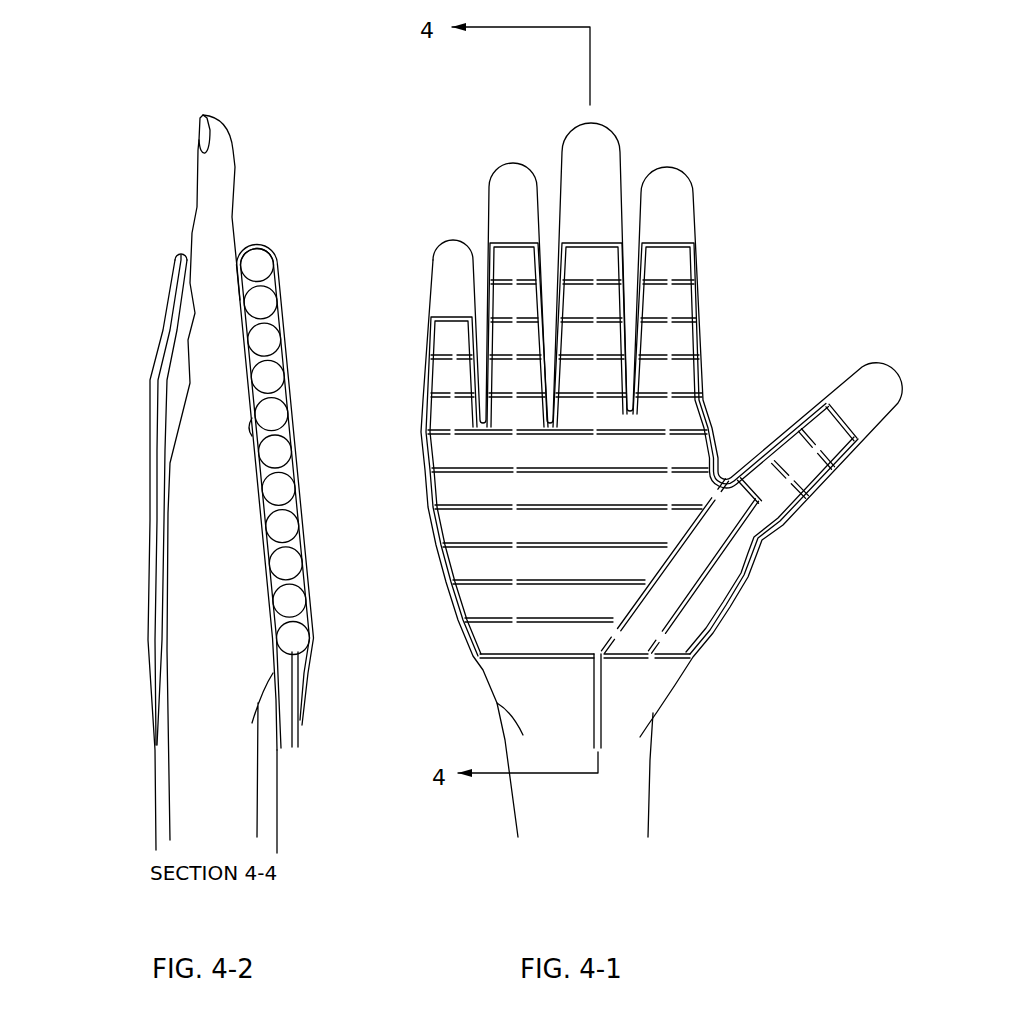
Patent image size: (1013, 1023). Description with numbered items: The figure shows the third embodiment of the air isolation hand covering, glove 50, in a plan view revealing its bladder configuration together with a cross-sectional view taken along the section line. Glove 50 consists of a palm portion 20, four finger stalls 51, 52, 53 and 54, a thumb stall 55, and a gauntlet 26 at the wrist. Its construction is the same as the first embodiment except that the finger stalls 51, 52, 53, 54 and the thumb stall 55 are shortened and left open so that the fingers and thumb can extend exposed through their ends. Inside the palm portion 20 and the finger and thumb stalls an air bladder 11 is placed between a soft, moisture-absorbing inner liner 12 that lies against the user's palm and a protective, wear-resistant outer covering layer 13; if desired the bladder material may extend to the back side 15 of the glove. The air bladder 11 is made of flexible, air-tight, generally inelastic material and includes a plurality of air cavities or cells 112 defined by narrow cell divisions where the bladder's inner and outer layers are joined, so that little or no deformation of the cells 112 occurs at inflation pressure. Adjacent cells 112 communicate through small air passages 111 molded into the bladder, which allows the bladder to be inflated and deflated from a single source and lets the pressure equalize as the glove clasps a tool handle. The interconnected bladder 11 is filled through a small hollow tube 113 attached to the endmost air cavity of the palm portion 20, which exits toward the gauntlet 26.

In FIG. 4-1, the glove 50 is at (750, 345).
In FIG. 4-2, the glove 50 is at (120, 217).
In FIG. 4-1, the finger stall 51 is at (447, 330).
In FIG. 4-1, the finger stall 52 is at (512, 263).
In FIG. 4-1, the finger stall 53 is at (592, 260).
In FIG. 4-1, the finger stall 54 is at (667, 265).
In FIG. 4-1, the thumb stall 55 is at (830, 438).
In FIG. 4-1, the air passages 111 is at (510, 612).
In FIG. 4-2, the air passages 111 is at (265, 352).
In FIG. 4-1, the air cavities or cells 112 is at (485, 533).
In FIG. 4-2, the air cavities or cells 112 is at (260, 303).
In FIG. 4-1, the hollow tube 113 is at (590, 702).
In FIG. 4-2, the hollow tube 113 is at (300, 731).
In FIG. 4-1, the palm portion 20 is at (592, 565).
In FIG. 4-2, the back side 15 is at (167, 343).
In FIG. 4-2, the air bladder 11 is at (287, 508).
In FIG. 4-2, the inner liner 12 is at (253, 433).
In FIG. 4-2, the outer covering layer 13 is at (292, 470).
In FIG. 4-2, the gauntlet 26 is at (282, 809).